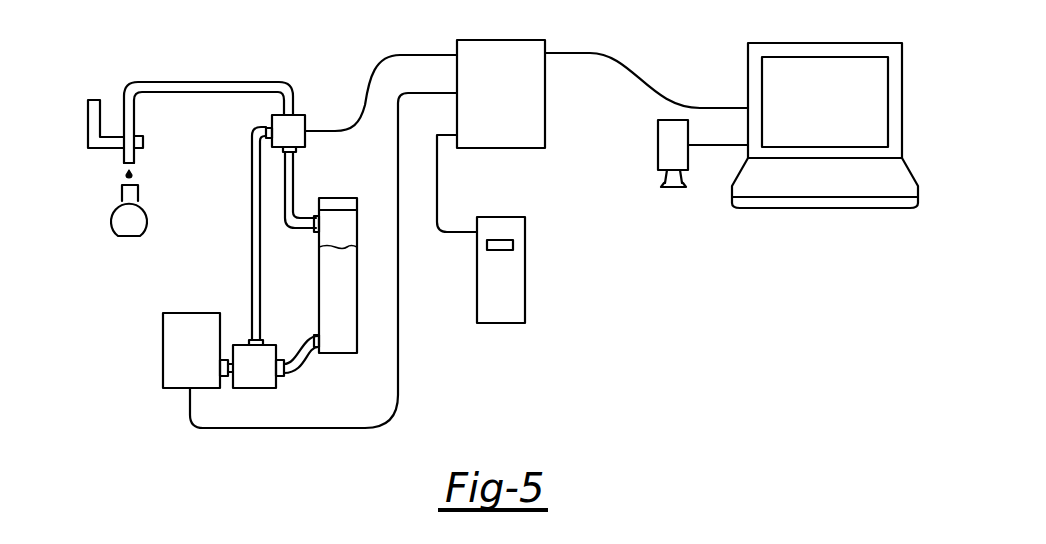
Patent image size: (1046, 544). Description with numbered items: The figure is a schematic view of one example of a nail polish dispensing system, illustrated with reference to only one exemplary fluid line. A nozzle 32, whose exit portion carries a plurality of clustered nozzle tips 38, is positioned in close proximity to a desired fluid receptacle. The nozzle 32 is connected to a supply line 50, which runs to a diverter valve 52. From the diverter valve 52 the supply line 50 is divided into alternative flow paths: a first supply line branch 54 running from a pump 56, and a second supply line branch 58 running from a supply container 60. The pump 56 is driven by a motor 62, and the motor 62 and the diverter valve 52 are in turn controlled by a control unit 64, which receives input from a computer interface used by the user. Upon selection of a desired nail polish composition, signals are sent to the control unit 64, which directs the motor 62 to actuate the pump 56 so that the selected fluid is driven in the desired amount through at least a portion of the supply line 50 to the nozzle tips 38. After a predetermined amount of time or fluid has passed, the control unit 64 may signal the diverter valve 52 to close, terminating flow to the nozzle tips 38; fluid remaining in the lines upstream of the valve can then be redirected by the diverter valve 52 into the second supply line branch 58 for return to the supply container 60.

The nozzle 32 is at (111, 96).
The supply line 50 is at (188, 81).
The nozzle tips 38 is at (136, 154).
The diverter valve 52 is at (299, 142).
The first supply line branch 54 is at (251, 221).
The second supply line branch 58 is at (296, 160).
The supply container 60 is at (346, 304).
The pump 56 is at (263, 375).
The motor 62 is at (198, 360).
The control unit 64 is at (509, 103).